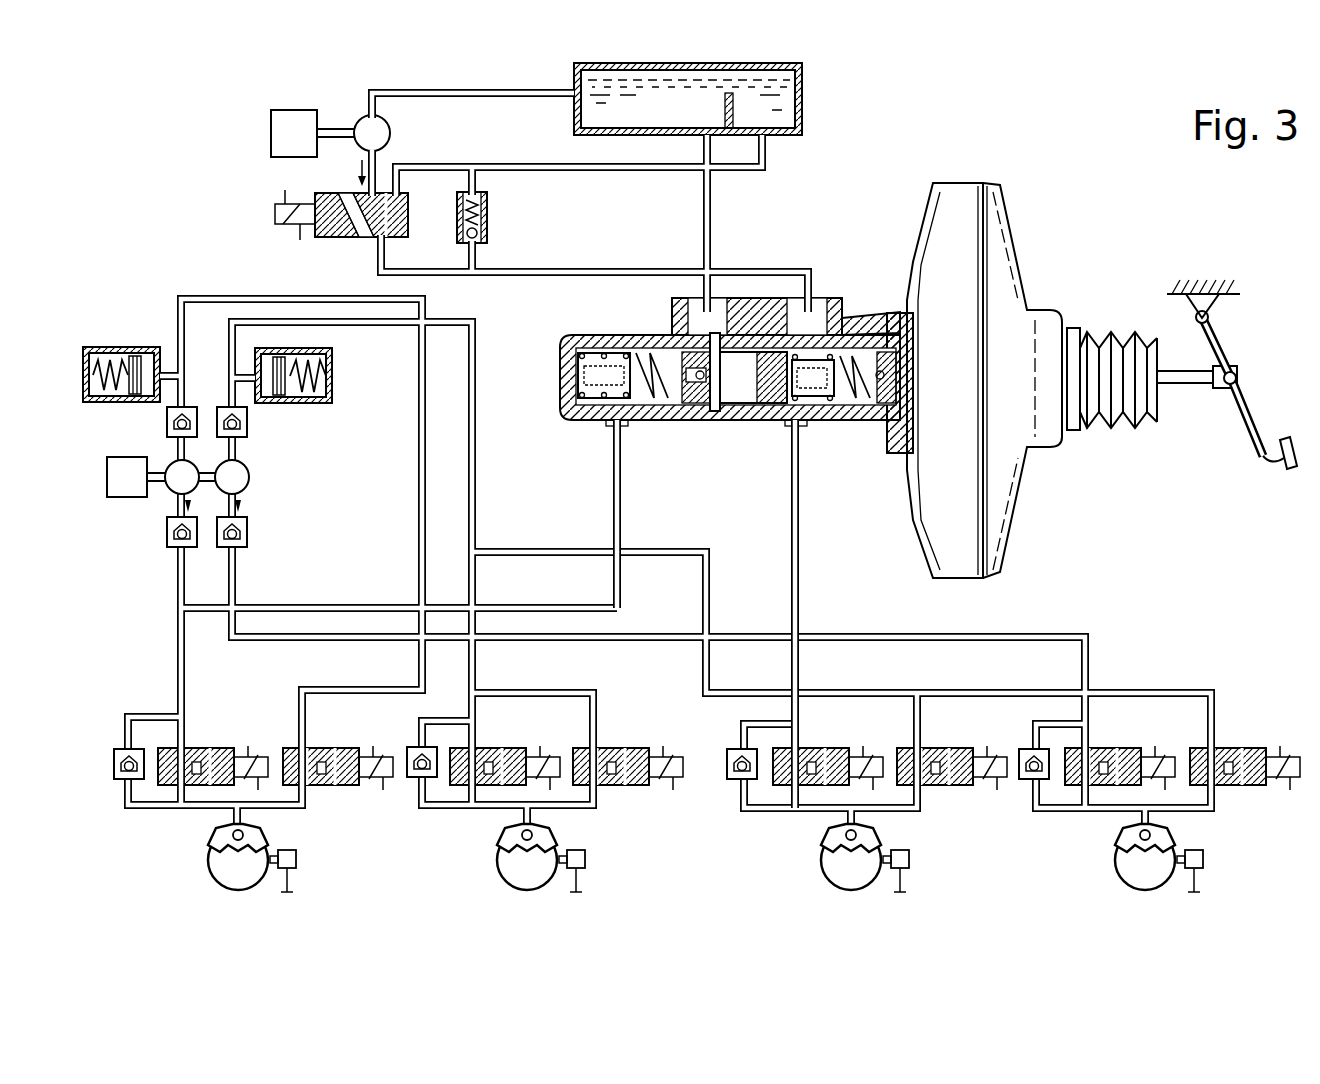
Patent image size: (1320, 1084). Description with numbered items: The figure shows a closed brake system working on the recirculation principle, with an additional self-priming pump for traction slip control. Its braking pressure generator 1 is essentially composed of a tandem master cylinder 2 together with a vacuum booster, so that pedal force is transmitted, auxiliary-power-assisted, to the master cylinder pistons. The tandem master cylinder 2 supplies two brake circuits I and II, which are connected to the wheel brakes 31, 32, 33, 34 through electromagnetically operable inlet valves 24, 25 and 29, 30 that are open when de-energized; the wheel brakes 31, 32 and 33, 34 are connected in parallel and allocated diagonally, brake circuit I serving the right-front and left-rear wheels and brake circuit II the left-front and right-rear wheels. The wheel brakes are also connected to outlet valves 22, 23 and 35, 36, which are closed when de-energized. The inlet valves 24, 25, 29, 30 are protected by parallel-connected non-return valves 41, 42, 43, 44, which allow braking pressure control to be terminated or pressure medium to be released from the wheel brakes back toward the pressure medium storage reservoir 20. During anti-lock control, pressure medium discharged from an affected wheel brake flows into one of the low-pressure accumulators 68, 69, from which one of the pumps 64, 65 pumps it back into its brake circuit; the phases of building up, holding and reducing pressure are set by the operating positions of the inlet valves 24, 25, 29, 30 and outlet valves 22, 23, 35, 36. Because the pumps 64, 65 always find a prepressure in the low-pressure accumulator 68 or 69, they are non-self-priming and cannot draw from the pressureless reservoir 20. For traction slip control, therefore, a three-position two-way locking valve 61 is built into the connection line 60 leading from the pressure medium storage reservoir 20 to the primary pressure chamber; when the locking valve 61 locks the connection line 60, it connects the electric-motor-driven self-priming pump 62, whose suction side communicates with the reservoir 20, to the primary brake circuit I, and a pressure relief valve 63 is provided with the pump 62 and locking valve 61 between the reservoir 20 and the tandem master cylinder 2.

The braking pressure generator 1 is at (872, 266).
The tandem master cylinder 2 is at (571, 342).
The pressure medium storage reservoir 20 is at (803, 96).
The outlet valve 22 is at (1228, 750).
The outlet valve 23 is at (935, 750).
The inlet valve 24 is at (1100, 752).
The inlet valve 25 is at (812, 750).
The inlet valve 29 is at (485, 748).
The inlet valve 30 is at (190, 751).
The wheel brake 31 is at (1130, 833).
The wheel brake 32 is at (836, 833).
The wheel brake 33 is at (512, 833).
The wheel brake 34 is at (222, 833).
The outlet valve 35 is at (600, 750).
The outlet valve 36 is at (322, 748).
The non-return valve 41 is at (1020, 757).
The non-return valve 42 is at (728, 757).
The non-return valve 43 is at (408, 757).
The non-return valve 44 is at (114, 757).
The connection line 60 is at (630, 173).
The 3/2-way valve 61 is at (352, 238).
The self-priming pump 62 is at (391, 128).
The pressure relief valve 63 is at (488, 218).
The pump 64 is at (247, 462).
The pump 65 is at (167, 462).
The low-pressure accumulator 68 is at (333, 366).
The low-pressure accumulator 69 is at (118, 347).
The brake circuit I is at (790, 498).
The brake circuit II is at (612, 498).